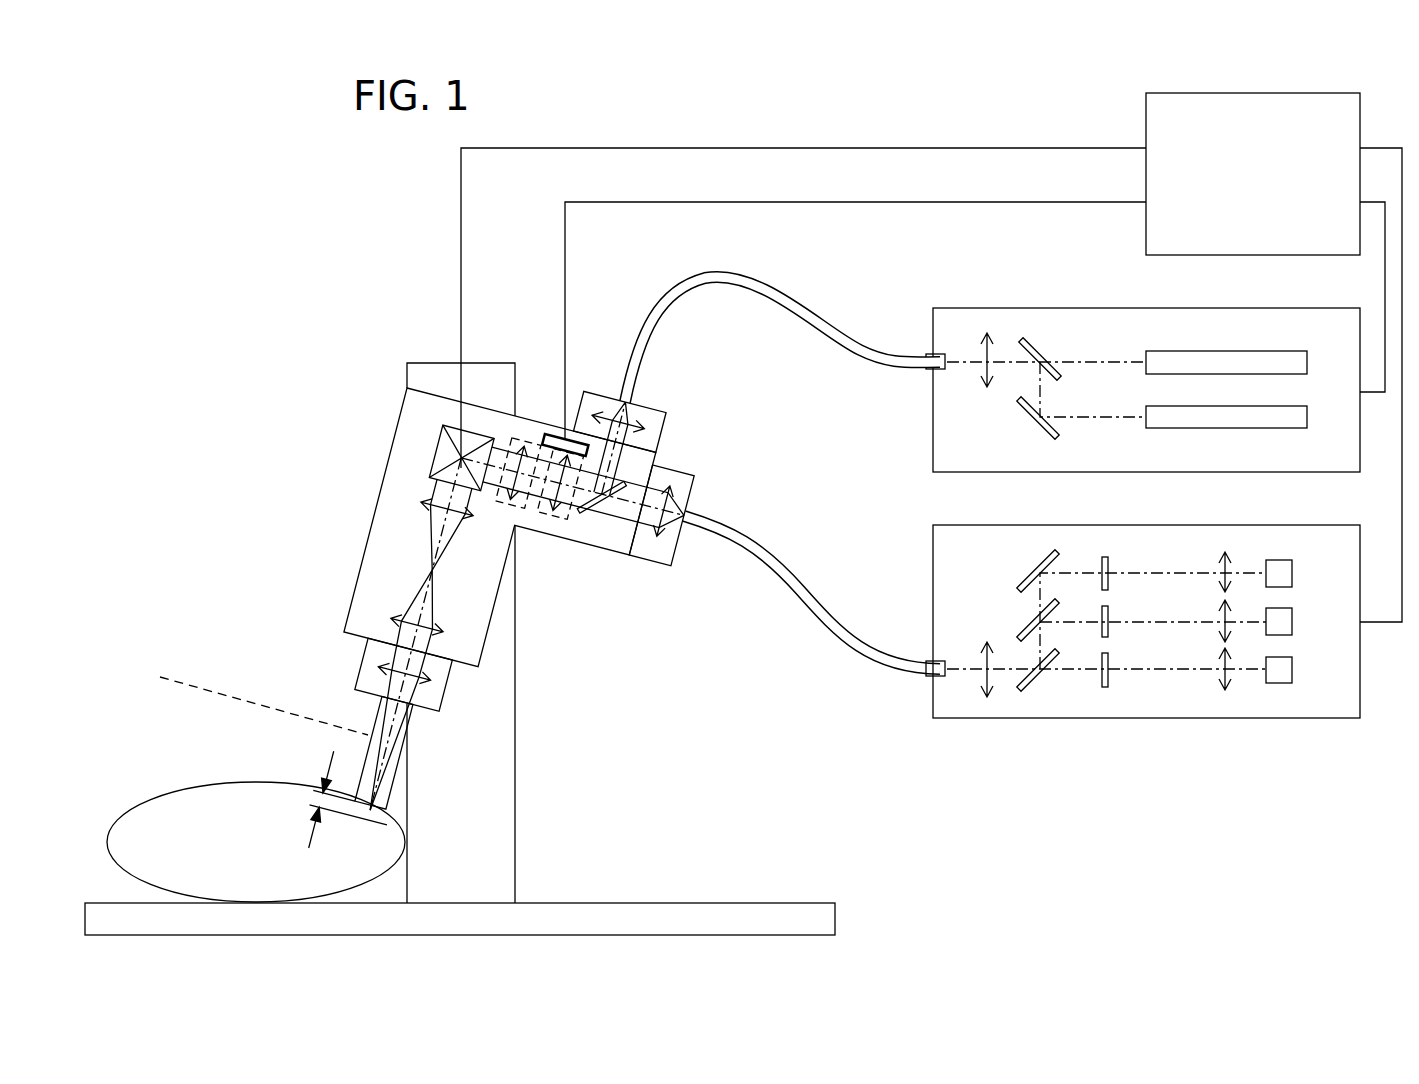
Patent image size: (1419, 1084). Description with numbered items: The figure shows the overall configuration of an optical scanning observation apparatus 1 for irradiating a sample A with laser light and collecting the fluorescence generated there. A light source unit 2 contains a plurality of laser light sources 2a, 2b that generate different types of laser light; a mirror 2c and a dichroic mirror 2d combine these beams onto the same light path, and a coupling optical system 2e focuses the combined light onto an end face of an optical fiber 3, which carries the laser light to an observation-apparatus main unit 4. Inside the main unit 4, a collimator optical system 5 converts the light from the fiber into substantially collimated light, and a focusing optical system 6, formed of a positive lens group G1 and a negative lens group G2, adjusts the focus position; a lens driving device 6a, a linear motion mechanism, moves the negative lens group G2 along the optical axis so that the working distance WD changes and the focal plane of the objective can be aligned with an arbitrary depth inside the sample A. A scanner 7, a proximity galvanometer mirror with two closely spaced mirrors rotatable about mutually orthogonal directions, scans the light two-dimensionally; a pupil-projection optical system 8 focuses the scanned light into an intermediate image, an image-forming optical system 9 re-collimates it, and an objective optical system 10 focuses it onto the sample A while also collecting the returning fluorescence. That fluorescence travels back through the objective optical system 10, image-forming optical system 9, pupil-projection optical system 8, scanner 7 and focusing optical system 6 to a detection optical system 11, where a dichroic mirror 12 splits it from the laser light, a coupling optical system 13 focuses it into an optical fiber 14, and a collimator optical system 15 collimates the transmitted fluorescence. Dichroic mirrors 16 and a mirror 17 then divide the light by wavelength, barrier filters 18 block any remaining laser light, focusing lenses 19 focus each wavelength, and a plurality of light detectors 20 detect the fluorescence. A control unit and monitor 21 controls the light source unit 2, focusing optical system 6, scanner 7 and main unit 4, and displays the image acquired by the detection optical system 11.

The optical scanning observation apparatus 1 is at (743, 514).
The light source unit 2 is at (1143, 354).
The laser light source 2a is at (1258, 351).
The laser light source 2b is at (1270, 428).
The mirror 2c is at (1027, 434).
The dichroic mirror 2d is at (1041, 340).
The coupling optical system 2e is at (984, 333).
The optical fiber 3 is at (826, 312).
The observation-apparatus main unit 4 is at (535, 606).
The collimator optical system 5 is at (678, 420).
The focusing optical system 6 is at (541, 527).
The lens driving device 6a is at (558, 437).
The scanner 7 is at (436, 451).
The pupil-projection optical system 8 is at (420, 502).
The image-forming optical system 9 is at (390, 617).
The objective optical system 10 is at (430, 681).
The detection optical system 11 is at (1143, 639).
The dichroic mirror 12 is at (590, 512).
The coupling optical system 13 is at (694, 492).
The optical fiber 14 is at (832, 634).
The collimator optical system 15 is at (979, 713).
The dichroic mirrors 16 is at (1025, 613).
The mirror 17 is at (1047, 550).
The barrier filters 18 is at (1103, 612).
The focusing lenses 19 is at (1222, 550).
The light detectors 20 is at (1293, 573).
The control unit and monitor 21 is at (1146, 118).
The sample A is at (188, 787).
The positive lens group G1 is at (505, 504).
The negative lens group G2 is at (552, 513).
The working distance WD is at (339, 807).